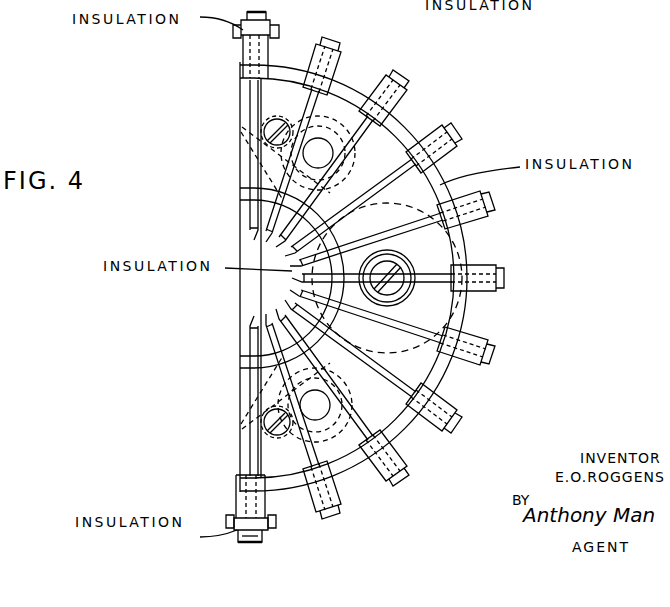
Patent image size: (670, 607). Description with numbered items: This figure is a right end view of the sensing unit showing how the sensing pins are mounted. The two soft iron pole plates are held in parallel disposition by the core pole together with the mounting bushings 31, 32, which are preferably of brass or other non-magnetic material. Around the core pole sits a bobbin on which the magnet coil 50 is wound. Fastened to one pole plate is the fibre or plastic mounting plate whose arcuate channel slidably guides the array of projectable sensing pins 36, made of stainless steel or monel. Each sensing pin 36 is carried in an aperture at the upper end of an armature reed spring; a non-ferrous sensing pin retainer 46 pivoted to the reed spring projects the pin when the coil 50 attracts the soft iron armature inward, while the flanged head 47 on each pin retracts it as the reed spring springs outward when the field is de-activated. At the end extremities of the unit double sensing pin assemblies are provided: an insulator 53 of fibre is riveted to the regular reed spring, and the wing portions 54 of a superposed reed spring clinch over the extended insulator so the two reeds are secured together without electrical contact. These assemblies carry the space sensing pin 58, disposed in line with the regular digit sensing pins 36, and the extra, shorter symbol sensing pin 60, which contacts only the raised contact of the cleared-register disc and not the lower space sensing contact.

The mounting bushing 31 is at (344, 163).
The mounting bushing 32 is at (346, 401).
The projectable sensing pin 36 is at (277, 243).
The sensing pin retainer 46 is at (337, 517).
The flanged head 47 is at (400, 477).
The magnet coil 50 is at (283, 285).
The insulator 53 is at (235, 518).
The wing portion 54 is at (267, 530).
The space sensing pin 58 is at (250, 233).
The symbol sensing pin 60 is at (247, 222).